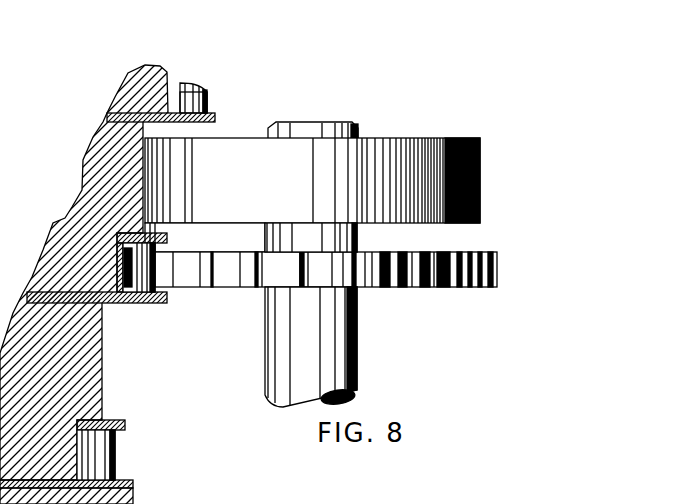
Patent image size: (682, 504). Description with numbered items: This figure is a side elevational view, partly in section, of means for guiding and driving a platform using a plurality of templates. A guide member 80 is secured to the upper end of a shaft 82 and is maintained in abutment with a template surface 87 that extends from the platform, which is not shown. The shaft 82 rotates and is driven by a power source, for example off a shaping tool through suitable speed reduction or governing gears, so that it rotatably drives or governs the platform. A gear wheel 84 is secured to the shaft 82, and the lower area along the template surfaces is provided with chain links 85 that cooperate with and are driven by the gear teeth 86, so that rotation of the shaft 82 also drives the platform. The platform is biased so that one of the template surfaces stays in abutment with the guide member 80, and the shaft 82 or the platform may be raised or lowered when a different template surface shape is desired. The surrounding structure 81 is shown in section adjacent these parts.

The guide member 80 is at (413, 137).
The housing wall 81 is at (103, 333).
The shaft 82 is at (357, 342).
The gear wheel 84 is at (432, 290).
The chain links 85 is at (137, 292).
The gear teeth 86 is at (202, 275).
The template surface 87 is at (147, 130).